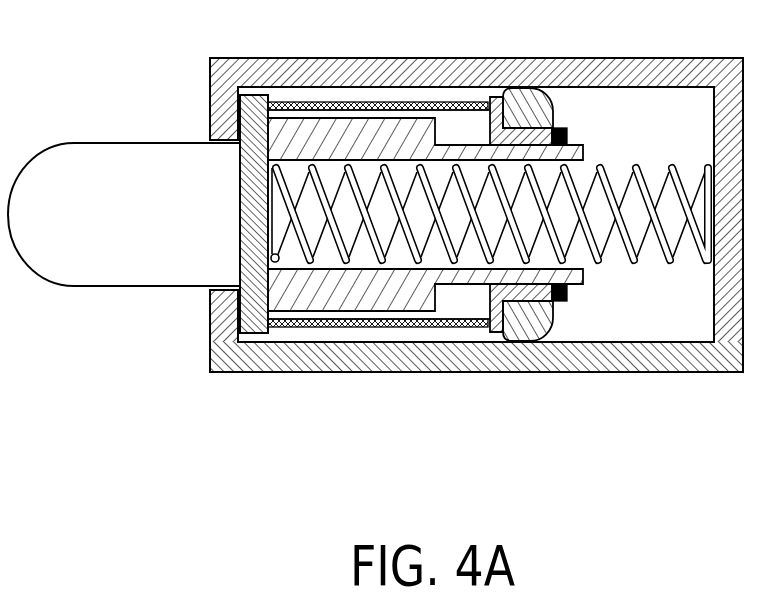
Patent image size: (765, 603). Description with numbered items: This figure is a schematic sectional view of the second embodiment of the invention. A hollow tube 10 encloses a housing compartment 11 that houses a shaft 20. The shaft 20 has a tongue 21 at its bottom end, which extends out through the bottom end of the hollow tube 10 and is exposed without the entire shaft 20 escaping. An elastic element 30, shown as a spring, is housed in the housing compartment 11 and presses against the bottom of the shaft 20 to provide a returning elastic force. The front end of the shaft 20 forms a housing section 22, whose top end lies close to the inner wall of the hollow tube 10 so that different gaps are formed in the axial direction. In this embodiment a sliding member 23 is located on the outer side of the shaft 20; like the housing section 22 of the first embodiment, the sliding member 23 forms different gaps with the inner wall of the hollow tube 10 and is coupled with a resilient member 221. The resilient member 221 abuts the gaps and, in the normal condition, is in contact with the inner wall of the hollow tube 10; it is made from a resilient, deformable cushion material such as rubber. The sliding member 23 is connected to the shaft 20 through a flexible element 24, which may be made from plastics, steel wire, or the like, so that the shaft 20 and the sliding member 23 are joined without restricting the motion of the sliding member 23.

The hollow tube 10 is at (279, 58).
The housing compartment 11 is at (632, 97).
The shaft 20 is at (218, 318).
The tongue 21 is at (108, 270).
The housing section 22 is at (413, 130).
The resilient member 221 is at (533, 105).
The sliding member 23 is at (493, 100).
The flexible element 24 is at (373, 102).
The elastic element 30 is at (638, 265).